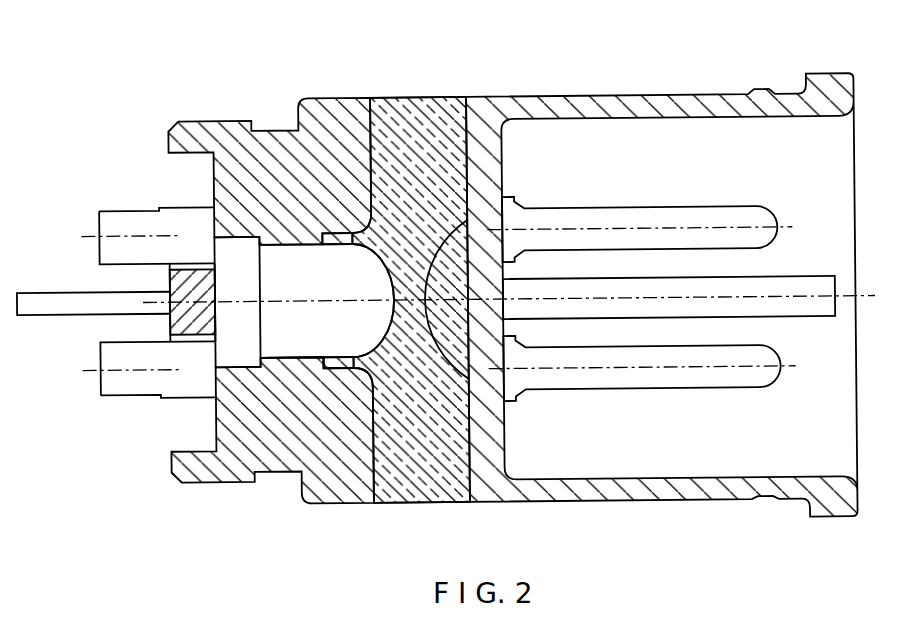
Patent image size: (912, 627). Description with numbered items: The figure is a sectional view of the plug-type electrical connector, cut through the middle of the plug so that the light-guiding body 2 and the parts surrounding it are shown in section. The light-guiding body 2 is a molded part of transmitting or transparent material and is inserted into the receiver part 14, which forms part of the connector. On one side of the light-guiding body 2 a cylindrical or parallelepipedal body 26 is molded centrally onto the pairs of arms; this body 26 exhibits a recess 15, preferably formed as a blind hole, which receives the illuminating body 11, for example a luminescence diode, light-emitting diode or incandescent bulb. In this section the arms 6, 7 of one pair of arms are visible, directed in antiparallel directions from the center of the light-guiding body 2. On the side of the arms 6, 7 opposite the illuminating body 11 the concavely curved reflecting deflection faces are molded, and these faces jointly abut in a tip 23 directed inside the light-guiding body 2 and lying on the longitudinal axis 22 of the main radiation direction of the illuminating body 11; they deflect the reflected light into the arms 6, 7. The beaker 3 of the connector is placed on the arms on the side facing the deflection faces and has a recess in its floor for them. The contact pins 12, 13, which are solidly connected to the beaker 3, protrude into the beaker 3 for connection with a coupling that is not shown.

The light-guiding body 2 is at (346, 231).
The beaker 3 is at (740, 500).
The arm 6 is at (441, 98).
The arm 7 is at (415, 495).
The illuminating body 11 is at (332, 285).
The contact pin 12 is at (774, 220).
The contact pin 13 is at (759, 380).
The receiver part 14 is at (234, 138).
The recess 15 is at (324, 356).
The longitudinal axis 22 is at (767, 288).
The tip 23 is at (468, 388).
The cylindrical or parallelepipedal body 26 is at (356, 362).